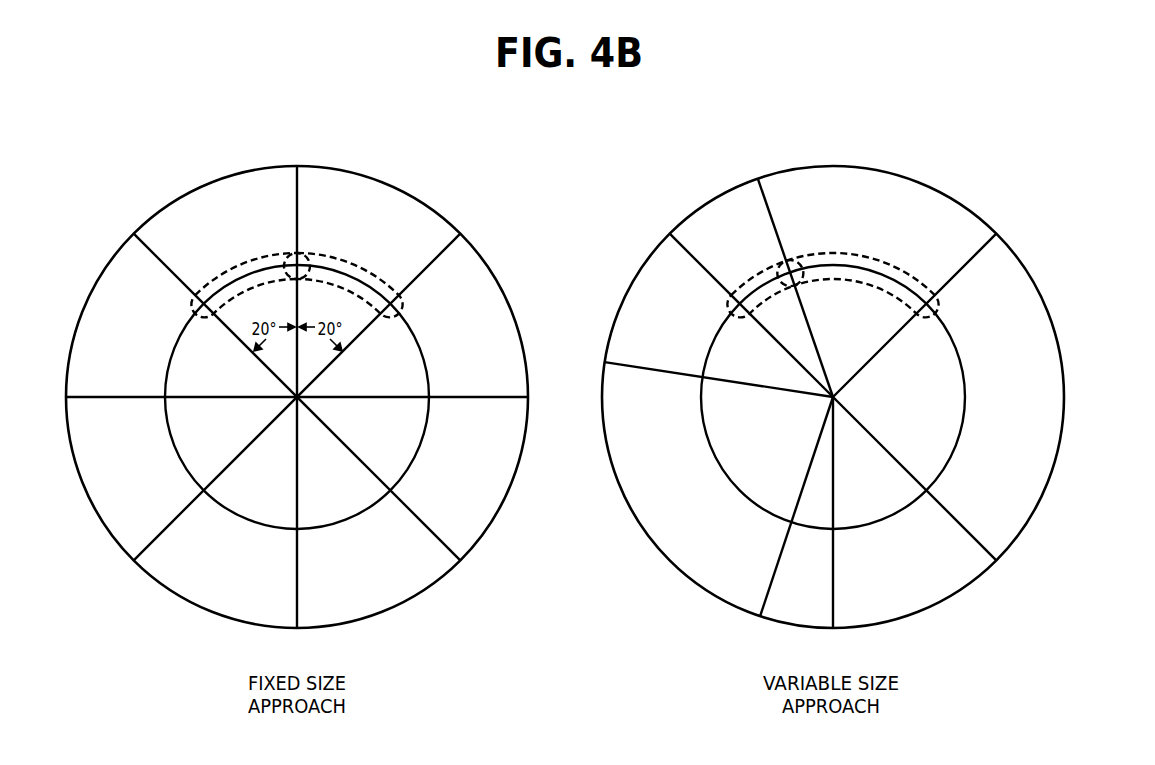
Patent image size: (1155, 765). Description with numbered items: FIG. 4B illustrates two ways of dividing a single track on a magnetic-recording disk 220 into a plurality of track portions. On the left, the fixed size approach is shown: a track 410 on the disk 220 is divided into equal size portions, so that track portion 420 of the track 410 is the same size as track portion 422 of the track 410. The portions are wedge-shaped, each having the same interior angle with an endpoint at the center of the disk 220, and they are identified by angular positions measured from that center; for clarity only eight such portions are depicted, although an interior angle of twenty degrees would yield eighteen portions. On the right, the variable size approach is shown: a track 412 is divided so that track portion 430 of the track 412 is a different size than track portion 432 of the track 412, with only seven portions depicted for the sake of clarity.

The disk 220 is at (418, 197).
The track 410 is at (412, 330).
The track 412 is at (947, 332).
The track portion 420 is at (353, 262).
The track portion 422 is at (262, 254).
The track portion 430 is at (883, 262).
The track portion 432 is at (766, 276).